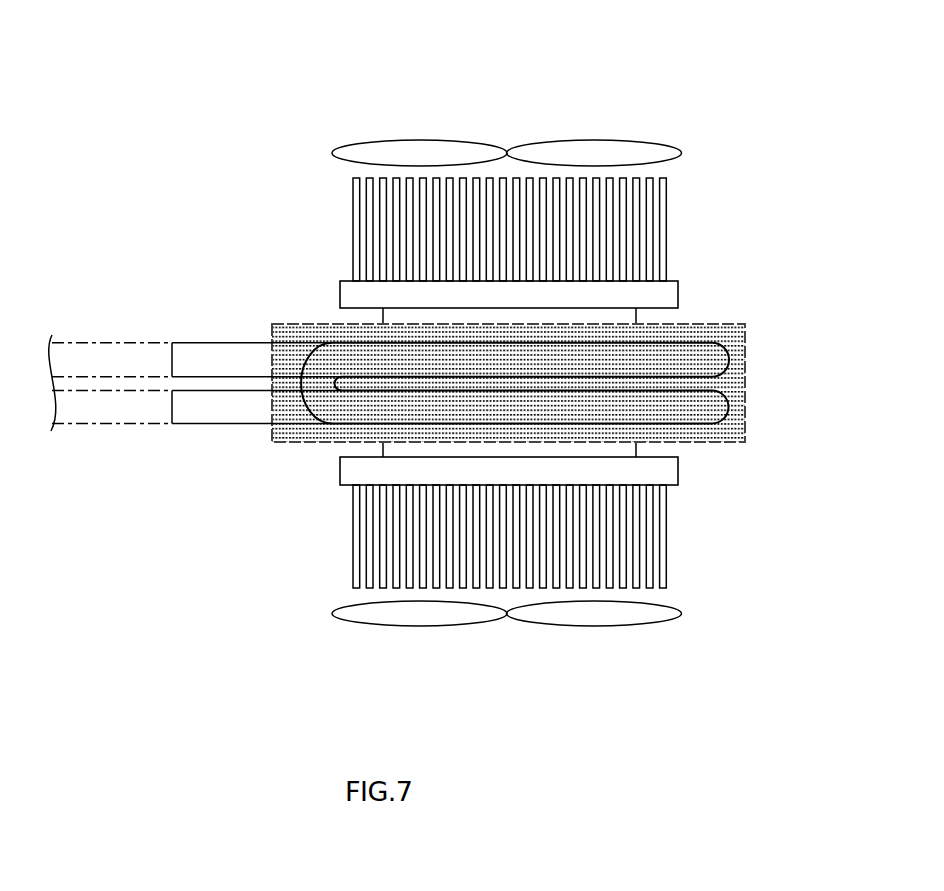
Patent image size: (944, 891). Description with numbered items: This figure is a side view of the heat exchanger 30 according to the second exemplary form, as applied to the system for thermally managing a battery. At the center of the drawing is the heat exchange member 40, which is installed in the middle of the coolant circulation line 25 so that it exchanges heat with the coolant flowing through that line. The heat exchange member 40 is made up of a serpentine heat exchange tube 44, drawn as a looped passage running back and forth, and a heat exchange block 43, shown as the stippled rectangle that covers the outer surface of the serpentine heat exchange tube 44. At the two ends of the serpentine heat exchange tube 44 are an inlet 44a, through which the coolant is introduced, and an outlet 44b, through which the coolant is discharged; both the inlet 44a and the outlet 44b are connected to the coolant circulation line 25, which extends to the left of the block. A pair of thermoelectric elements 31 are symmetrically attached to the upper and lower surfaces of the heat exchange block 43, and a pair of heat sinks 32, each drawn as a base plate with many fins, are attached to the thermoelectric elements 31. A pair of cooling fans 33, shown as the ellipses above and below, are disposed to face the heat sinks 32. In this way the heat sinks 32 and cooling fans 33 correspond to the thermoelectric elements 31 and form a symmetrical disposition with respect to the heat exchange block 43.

The heat exchanger 30 is at (230, 30).
The coolant circulation line 25 is at (111, 342).
The thermoelectric element 31 is at (383, 322).
The heat sink 32 is at (667, 227).
The cooling fan 33 is at (593, 140).
The heat exchange member 40 is at (458, 429).
The heat exchange block 43 is at (290, 443).
The serpentine heat exchange tube 44 is at (711, 342).
The inlet 44a is at (212, 342).
The outlet 44b is at (212, 424).